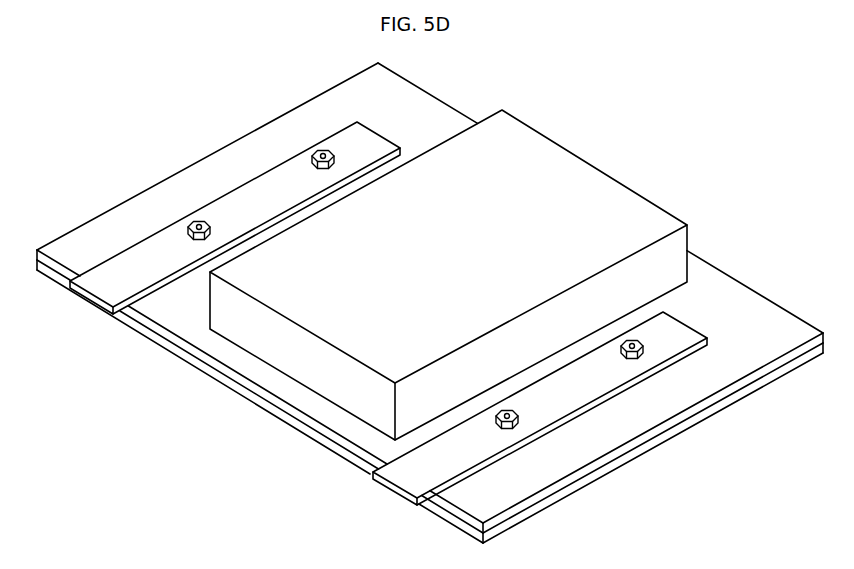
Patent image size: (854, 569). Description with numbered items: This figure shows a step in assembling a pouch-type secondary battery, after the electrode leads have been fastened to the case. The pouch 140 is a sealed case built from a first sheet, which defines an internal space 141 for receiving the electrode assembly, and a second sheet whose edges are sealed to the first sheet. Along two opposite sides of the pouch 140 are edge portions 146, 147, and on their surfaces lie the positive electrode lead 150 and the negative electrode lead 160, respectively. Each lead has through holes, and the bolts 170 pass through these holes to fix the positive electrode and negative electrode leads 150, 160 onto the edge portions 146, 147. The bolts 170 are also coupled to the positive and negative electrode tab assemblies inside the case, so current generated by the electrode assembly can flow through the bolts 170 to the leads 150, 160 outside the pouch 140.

The pouch 140 is at (598, 150).
The internal space 141 is at (327, 325).
The edge portion 146 is at (548, 465).
The edge portion 147 is at (320, 104).
The positive electrode lead 150 is at (593, 387).
The negative electrode lead 160 is at (260, 187).
The bolts 170 is at (188, 225).